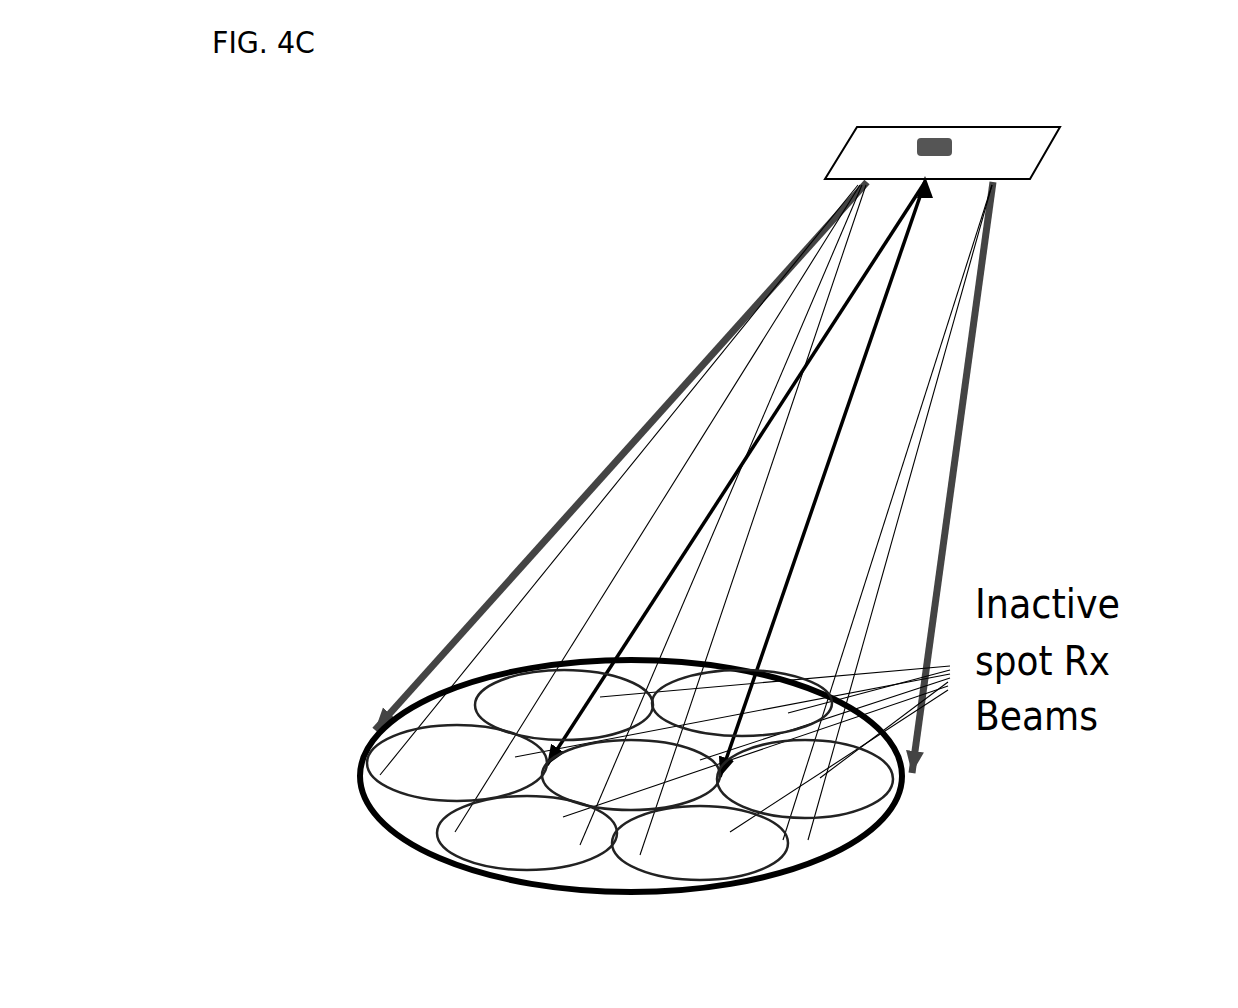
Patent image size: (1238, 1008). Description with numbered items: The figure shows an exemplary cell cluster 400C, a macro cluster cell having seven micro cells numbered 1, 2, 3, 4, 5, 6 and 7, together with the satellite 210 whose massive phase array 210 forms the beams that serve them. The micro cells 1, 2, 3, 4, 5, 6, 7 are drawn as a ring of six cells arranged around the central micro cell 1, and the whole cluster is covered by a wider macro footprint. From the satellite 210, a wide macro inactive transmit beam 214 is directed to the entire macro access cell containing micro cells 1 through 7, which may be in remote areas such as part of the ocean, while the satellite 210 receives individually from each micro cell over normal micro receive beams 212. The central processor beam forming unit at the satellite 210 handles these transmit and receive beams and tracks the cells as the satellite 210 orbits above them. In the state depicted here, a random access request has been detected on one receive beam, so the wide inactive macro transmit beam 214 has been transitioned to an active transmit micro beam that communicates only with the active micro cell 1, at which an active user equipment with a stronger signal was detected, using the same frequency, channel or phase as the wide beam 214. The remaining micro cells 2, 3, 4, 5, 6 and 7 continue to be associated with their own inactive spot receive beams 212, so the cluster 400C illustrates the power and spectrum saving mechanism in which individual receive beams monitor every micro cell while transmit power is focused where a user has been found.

The satellite 210 is at (877, 142).
The micro receive beam 212 is at (852, 395).
The wider macro inactive transmit beam 214 is at (602, 462).
The micro cell 1 is at (631, 775).
The micro cell 2 is at (527, 833).
The micro cell 3 is at (700, 843).
The micro cell 4 is at (805, 779).
The micro cell 5 is at (742, 703).
The micro cell 6 is at (564, 705).
The micro cell 7 is at (457, 763).
The cell cluster 400C is at (567, 777).